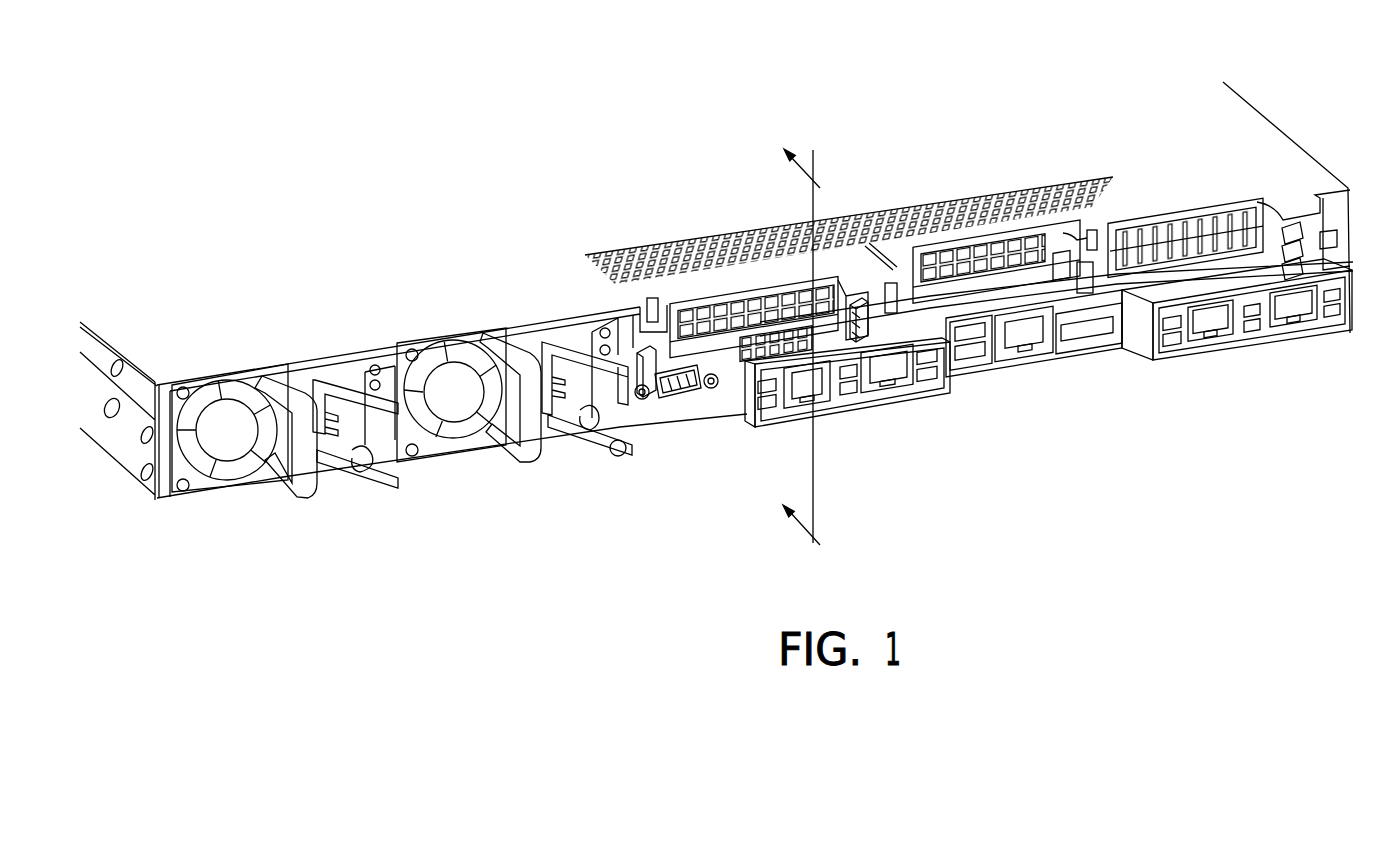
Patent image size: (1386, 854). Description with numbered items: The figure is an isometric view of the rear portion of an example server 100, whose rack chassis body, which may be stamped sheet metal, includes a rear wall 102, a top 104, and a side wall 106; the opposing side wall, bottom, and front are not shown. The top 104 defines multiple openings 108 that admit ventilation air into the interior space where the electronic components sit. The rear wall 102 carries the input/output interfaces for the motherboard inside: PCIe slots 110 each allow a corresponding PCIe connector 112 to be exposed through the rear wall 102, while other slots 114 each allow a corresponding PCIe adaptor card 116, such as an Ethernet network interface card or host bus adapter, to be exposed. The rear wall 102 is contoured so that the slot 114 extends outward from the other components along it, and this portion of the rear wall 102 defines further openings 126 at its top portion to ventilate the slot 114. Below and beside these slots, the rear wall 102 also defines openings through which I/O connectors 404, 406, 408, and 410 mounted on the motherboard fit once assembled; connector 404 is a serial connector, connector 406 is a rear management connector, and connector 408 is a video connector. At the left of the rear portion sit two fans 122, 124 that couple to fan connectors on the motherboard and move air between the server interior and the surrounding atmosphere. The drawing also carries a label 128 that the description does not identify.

The server 100 is at (283, 181).
The rear wall 102 is at (237, 487).
The top 104 is at (503, 307).
The side wall 106 is at (123, 450).
The openings 108 is at (654, 217).
The slots 110 is at (710, 293).
The PCIe connector 112 is at (732, 295).
The slots 114 is at (733, 360).
The PCIe adaptor card 116 is at (848, 397).
The fan 122 is at (213, 487).
The fan 124 is at (453, 447).
The openings 126 is at (717, 390).
The section line 128 is at (813, 462).
The I/O connector 404 is at (675, 400).
The I/O connector 406 is at (969, 372).
The I/O connector 408 is at (1027, 358).
The I/O connector 410 is at (1088, 350).